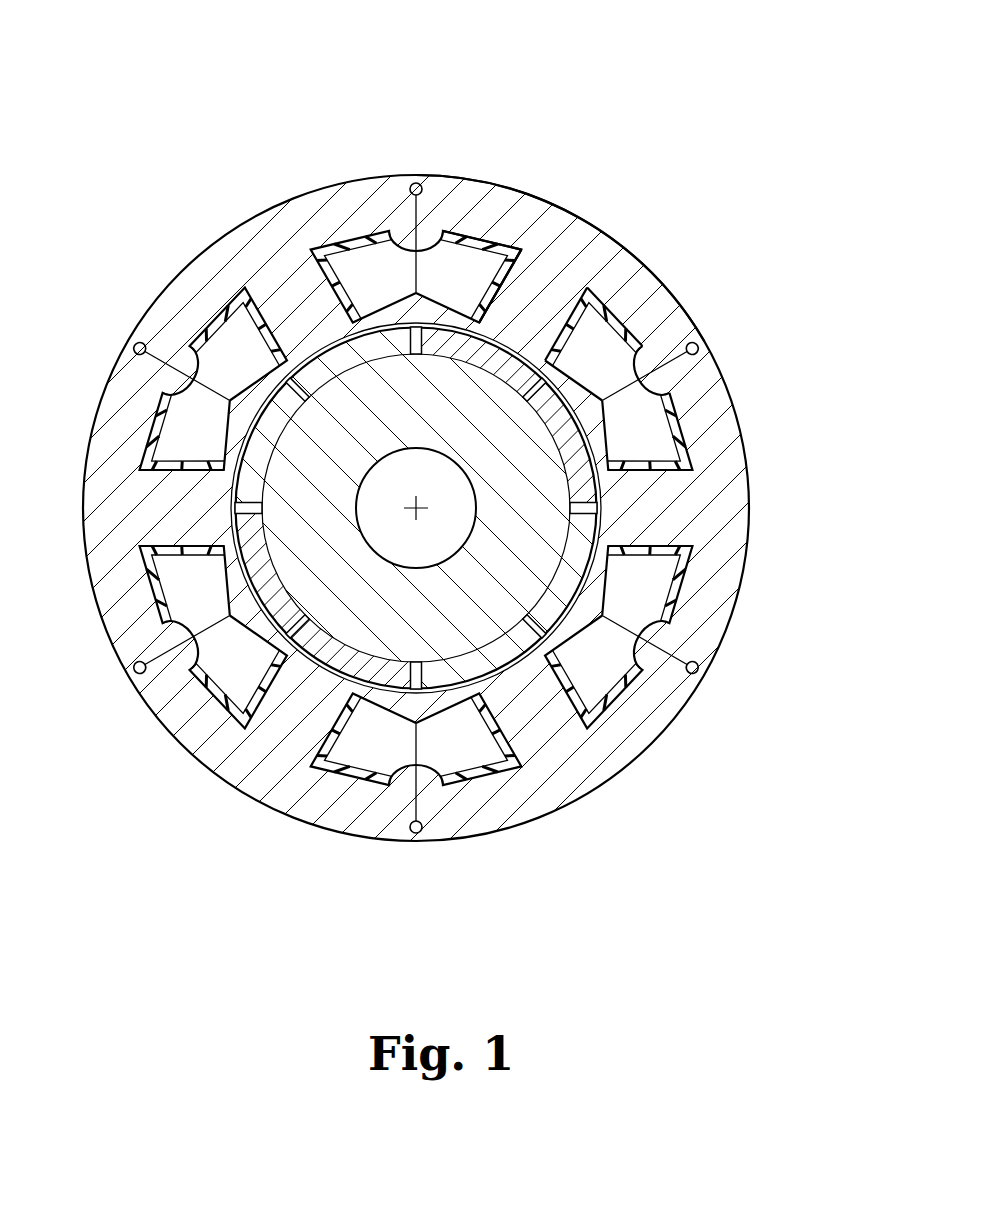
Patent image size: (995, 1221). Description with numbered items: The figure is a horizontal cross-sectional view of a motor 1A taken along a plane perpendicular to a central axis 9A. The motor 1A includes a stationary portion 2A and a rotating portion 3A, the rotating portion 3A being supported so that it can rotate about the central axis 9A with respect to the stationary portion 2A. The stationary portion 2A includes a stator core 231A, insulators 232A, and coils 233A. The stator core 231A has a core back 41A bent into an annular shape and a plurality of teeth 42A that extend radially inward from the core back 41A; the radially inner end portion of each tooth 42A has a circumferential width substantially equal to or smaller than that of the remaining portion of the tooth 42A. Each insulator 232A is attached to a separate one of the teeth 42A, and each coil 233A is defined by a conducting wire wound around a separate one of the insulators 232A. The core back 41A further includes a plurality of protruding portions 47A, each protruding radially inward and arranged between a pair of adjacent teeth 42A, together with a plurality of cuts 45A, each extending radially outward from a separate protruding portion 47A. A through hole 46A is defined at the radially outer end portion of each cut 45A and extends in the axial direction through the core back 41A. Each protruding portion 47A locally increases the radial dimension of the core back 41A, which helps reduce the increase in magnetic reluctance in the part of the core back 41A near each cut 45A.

The motor 1A is at (290, 126).
The stationary portion 2A is at (608, 800).
The rotating portion 3A is at (580, 616).
The central axis 9A is at (410, 503).
The stator core 231A is at (763, 133).
The insulator 232A is at (498, 255).
The coil 233A is at (473, 280).
The core back 41A is at (638, 293).
The tooth 42A is at (538, 318).
The cut 45A is at (667, 360).
The through hole 46A is at (700, 354).
The protruding portion 47A is at (658, 379).